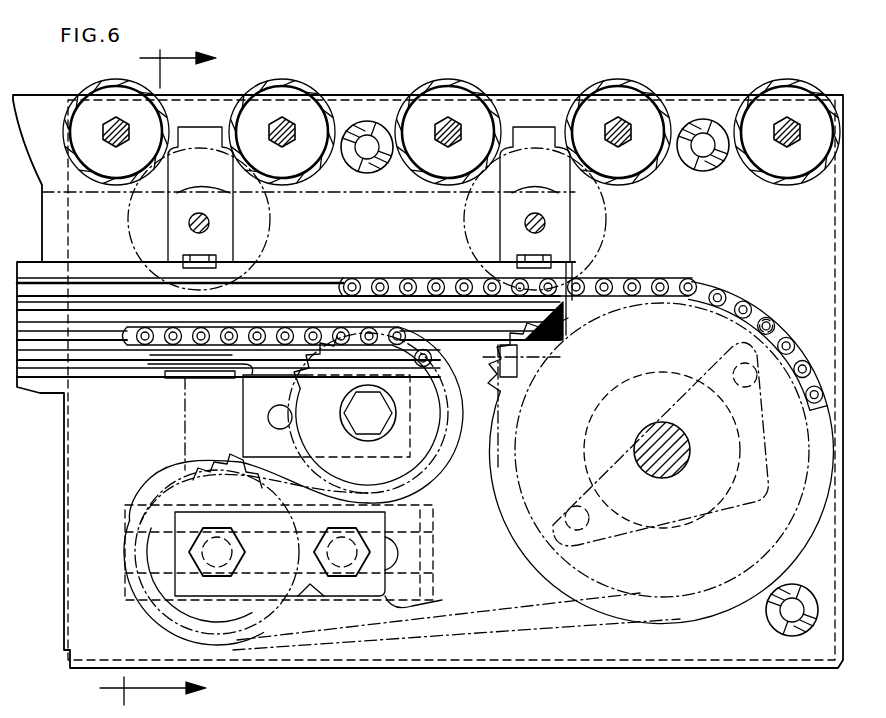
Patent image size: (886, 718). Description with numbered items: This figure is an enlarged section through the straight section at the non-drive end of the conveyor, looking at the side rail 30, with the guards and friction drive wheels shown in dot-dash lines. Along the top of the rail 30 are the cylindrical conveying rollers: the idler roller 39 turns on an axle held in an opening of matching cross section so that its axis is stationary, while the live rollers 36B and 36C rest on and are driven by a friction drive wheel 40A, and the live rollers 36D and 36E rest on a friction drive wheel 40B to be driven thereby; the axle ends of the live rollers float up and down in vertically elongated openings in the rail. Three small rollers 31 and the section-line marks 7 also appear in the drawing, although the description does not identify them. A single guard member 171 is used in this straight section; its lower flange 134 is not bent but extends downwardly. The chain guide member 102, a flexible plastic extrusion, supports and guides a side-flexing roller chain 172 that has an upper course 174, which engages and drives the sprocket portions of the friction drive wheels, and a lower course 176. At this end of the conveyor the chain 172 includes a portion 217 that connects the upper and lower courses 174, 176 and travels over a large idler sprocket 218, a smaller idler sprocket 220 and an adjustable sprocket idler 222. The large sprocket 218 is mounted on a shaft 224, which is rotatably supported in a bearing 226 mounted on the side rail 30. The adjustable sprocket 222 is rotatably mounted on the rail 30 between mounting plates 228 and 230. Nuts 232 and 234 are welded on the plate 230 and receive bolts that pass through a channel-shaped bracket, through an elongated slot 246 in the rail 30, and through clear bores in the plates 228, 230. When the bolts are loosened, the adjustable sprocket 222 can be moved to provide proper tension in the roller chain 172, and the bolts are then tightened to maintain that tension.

The section line 7- 7 is at (151, 376).
The side rail 30 is at (733, 645).
The guide roller 31 is at (367, 168).
The live roller 36B is at (626, 78).
The live roller 36C is at (440, 78).
The live roller 36D is at (292, 78).
The live roller 36E is at (96, 90).
The idler roller 39 is at (772, 78).
The friction drive wheel 40A is at (606, 212).
The friction drive wheel 40B is at (268, 219).
The chain guide member 102 is at (451, 257).
The lower flange 134 is at (592, 398).
The guard member 171 is at (336, 190).
The roller chain 172 is at (667, 266).
The upper course 174 is at (360, 278).
The lower course 176 is at (136, 356).
The chain portion 217 is at (756, 316).
The large idler sprocket 218 is at (647, 575).
The smaller idler sprocket 220 is at (420, 430).
The adjustable sprocket idler 222 is at (187, 606).
The shaft 224 is at (660, 455).
The bearing 226 is at (749, 444).
The mounting plate 228 is at (317, 593).
The mounting plate 230 is at (424, 594).
The nut 232 is at (212, 528).
The nut 234 is at (370, 568).
The elongated slot 246 is at (413, 550).